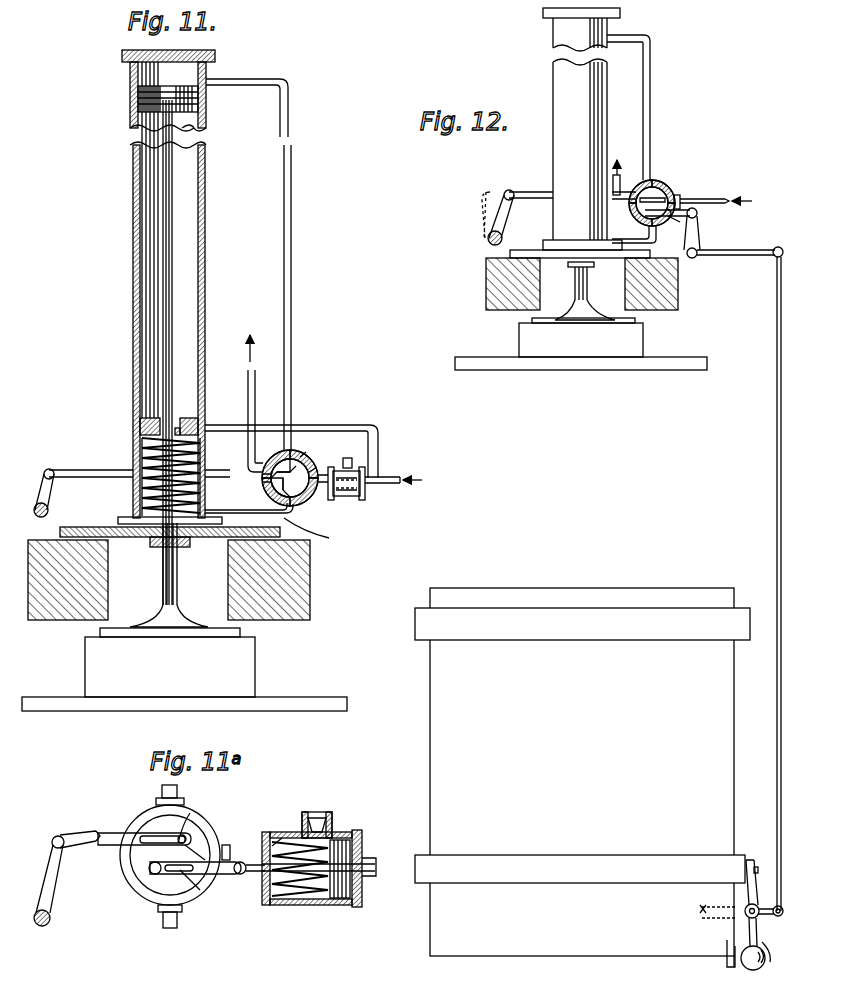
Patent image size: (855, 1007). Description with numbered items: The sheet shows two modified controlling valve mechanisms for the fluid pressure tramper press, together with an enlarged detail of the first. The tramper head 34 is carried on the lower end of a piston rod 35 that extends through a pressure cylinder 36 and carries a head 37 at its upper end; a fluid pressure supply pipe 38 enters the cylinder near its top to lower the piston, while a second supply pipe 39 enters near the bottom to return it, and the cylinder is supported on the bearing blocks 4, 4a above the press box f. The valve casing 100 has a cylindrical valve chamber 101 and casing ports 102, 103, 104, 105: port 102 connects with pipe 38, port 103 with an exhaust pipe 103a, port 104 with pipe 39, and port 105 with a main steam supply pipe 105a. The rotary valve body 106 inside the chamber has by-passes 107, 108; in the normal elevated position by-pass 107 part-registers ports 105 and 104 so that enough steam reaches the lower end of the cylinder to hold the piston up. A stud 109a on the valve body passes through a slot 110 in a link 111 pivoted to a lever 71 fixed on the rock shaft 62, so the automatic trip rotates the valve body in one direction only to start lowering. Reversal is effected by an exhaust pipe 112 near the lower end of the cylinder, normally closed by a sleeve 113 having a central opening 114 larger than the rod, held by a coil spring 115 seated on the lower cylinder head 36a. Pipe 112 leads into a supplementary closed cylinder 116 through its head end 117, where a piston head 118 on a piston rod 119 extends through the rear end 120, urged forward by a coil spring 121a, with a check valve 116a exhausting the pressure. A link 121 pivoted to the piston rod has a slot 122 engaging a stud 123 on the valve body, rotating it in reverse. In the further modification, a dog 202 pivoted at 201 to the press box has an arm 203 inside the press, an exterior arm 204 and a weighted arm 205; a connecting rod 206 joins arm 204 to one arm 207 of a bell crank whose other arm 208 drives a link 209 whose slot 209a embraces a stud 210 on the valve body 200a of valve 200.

In FIG. 11, the bearing block 4 is at (108, 597).
In FIG. 12, the bearing block 4 is at (486, 305).
In FIG. 11, the bearing block 4a is at (310, 592).
In FIG. 12, the bearing block 4a is at (678, 305).
In FIG. 12, the tramper head 34 is at (652, 362).
In FIG. 11, the piston rod 35 is at (173, 278).
In FIG. 11, the pressure cylinder 36 is at (133, 132).
In FIG. 12, the pressure cylinder 36 is at (552, 154).
In FIG. 11, the lower cylinder head 36a is at (192, 540).
In FIG. 11, the head 37 is at (146, 97).
In FIG. 11, the fluid pressure supply pipe 38 is at (292, 375).
In FIG. 11A, the fluid pressure supply pipe 38 is at (175, 788).
In FIG. 11, the second fluid pressure supply pipe 39 is at (315, 534).
In FIG. 11A, the second fluid pressure supply pipe 39 is at (165, 927).
In FIG. 11, the rock shaft 62 is at (48, 512).
In FIG. 11A, the rock shaft 62 is at (50, 922).
In FIG. 12, the rock shaft 62 is at (488, 240).
In FIG. 11, the lever 71 is at (52, 492).
In FIG. 11A, the lever 71 is at (55, 890).
In FIG. 12, the lever 71 is at (506, 216).
In FIG. 12, the press box f is at (722, 742).
In FIG. 11, the valve casing 100 is at (310, 462).
In FIG. 11A, the valve casing 100 is at (150, 812).
In FIG. 11, the valve chamber 101 is at (312, 495).
In FIG. 11, the casing port 102 is at (280, 460).
In FIG. 11, the casing port 103 is at (270, 489).
In FIG. 11, the exhaust pipe 103a is at (250, 393).
In FIG. 11, the casing port 104 is at (298, 510).
In FIG. 11, the casing port 105 is at (313, 474).
In FIG. 11, the main steam supply pipe 105a is at (392, 474).
In FIG. 11A, the main steam supply pipe 105a is at (238, 838).
In FIG. 11, the rotary valve body 106 is at (265, 466).
In FIG. 11A, the rotary valve body 106 is at (185, 820).
In FIG. 11, the by-pass 107 is at (300, 458).
In FIG. 11, the by-pass 108 is at (266, 470).
In FIG. 11A, the pin 109a is at (190, 838).
In FIG. 11A, the slot 110 is at (160, 836).
In FIG. 11, the link 111 is at (87, 472).
In FIG. 11A, the link 111 is at (80, 832).
In FIG. 12, the link 111 is at (528, 195).
In FIG. 11, the exhaust pipe 112 is at (366, 426).
In FIG. 11A, the exhaust pipe 112 is at (368, 860).
In FIG. 11, the sleeve 113 is at (140, 431).
In FIG. 11, the central opening 114 is at (140, 422).
In FIG. 11, the coil spring 115 is at (138, 490).
In FIG. 11, the supplementary closed cylinder 116 is at (364, 499).
In FIG. 11A, the supplementary closed cylinder 116 is at (300, 898).
In FIG. 11, the check valve 116a is at (355, 455).
In FIG. 11A, the check valve 116a is at (330, 802).
In FIG. 11A, the head end 117 is at (362, 836).
In FIG. 11A, the piston head 118 is at (340, 898).
In FIG. 11, the piston rod 119 is at (328, 486).
In FIG. 11A, the piston rod 119 is at (252, 872).
In FIG. 11A, the rear end 120 is at (262, 890).
In FIG. 11A, the link 121 is at (204, 890).
In FIG. 11A, the arm 121a is at (276, 840).
In FIG. 11A, the slot 122 is at (165, 870).
In FIG. 11A, the stud 123 is at (149, 870).
In FIG. 12, the valve 200 is at (672, 186).
In FIG. 12, the valve body 200a is at (676, 174).
In FIG. 12, the pivot 201 is at (745, 908).
In FIG. 12, the dog 202 is at (746, 915).
In FIG. 12, the arm 203 is at (745, 912).
In FIG. 12, the exterior arm 204 is at (770, 914).
In FIG. 12, the weighted arm 205 is at (768, 960).
In FIG. 12, the connecting rod 206 is at (776, 808).
In FIG. 12, the bell crank arm 207 is at (744, 258).
In FIG. 12, the bell crank arm 208 is at (700, 238).
In FIG. 12, the link 209 is at (690, 206).
In FIG. 12, the slot 209a is at (667, 222).
In FIG. 12, the stud 210 is at (626, 198).